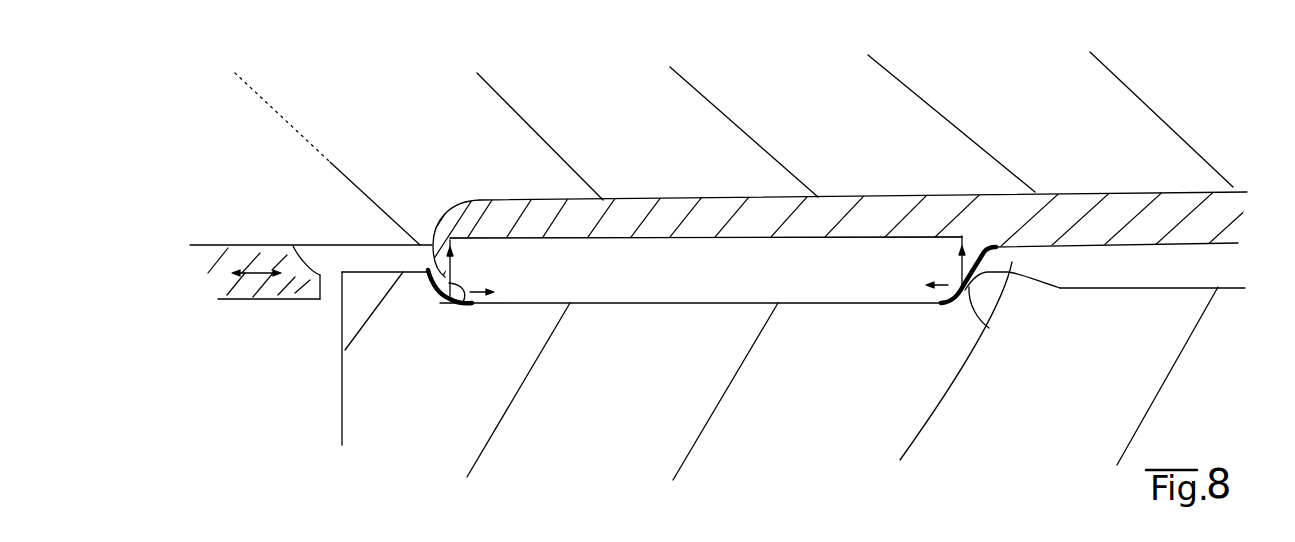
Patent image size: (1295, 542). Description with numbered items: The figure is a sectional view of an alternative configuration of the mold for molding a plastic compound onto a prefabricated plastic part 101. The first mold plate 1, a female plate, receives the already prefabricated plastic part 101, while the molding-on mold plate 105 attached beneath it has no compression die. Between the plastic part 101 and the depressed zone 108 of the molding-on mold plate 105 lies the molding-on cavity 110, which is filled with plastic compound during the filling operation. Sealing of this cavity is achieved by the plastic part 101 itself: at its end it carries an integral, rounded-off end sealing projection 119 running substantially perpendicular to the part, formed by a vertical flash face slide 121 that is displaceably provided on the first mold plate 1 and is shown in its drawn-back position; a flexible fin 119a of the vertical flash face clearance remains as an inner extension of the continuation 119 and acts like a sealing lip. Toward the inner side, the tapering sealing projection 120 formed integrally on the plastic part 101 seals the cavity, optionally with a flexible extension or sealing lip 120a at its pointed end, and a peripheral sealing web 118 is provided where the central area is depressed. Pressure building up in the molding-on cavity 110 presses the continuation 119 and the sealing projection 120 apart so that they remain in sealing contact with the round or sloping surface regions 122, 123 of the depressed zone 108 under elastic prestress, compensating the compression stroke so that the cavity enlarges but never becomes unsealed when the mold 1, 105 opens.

The first mold plate 1 is at (648, 118).
The prefabricated plastic part 101 is at (915, 150).
The molding-on mold plate 105 is at (864, 323).
The depressed zone 108 is at (672, 307).
The molding-on cavity 110 is at (762, 248).
The peripheral sealing web 118 is at (999, 274).
The end sealing projection 119 is at (453, 256).
The fin of the vertical flash face clearance 119a is at (456, 301).
The sealing projection 120 is at (953, 255).
The sealing lip 120a is at (957, 300).
The vertical flash face slide 121 is at (243, 291).
The round or sloping surface region 122 is at (445, 304).
The round or sloping surface region 123 is at (994, 320).